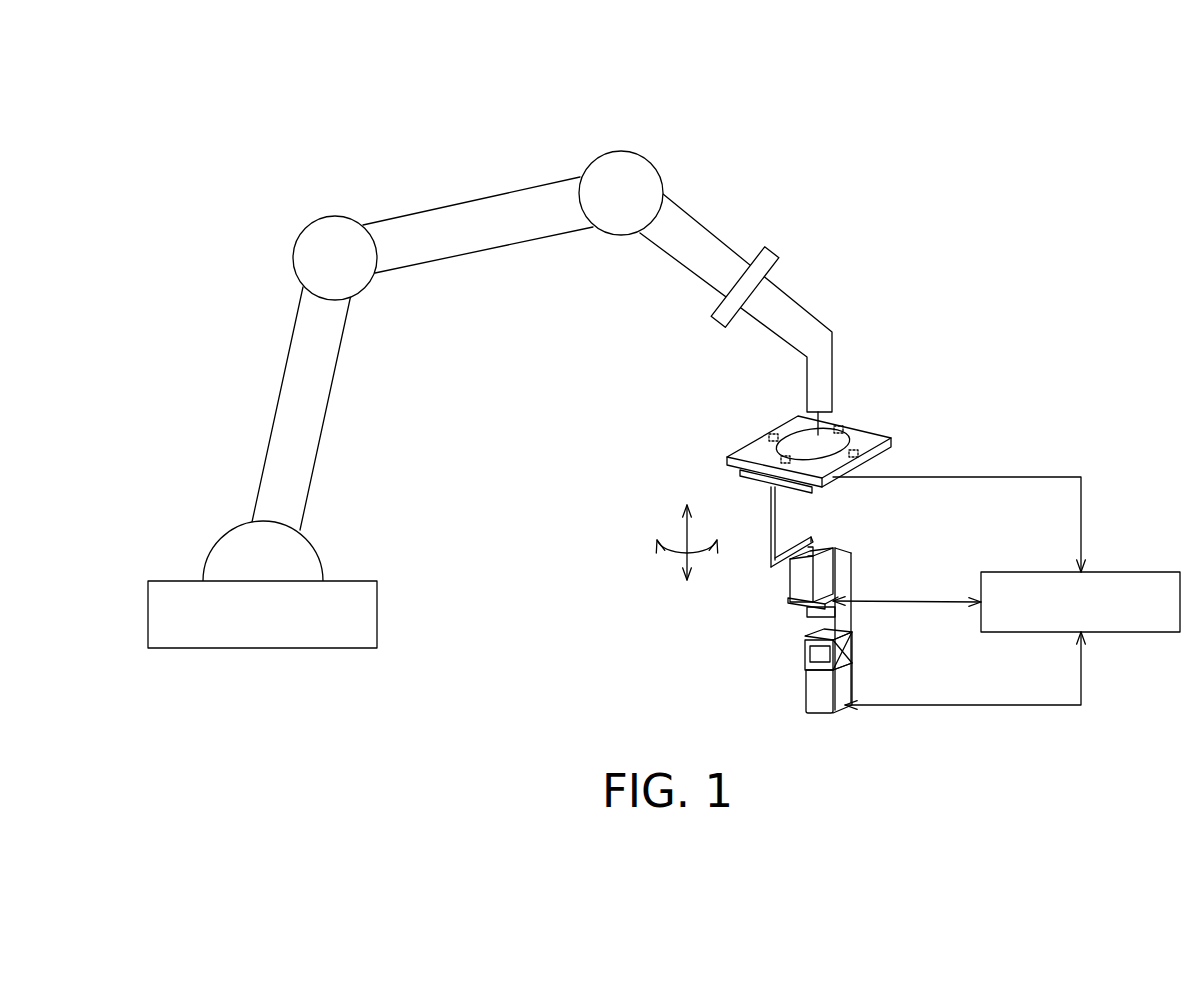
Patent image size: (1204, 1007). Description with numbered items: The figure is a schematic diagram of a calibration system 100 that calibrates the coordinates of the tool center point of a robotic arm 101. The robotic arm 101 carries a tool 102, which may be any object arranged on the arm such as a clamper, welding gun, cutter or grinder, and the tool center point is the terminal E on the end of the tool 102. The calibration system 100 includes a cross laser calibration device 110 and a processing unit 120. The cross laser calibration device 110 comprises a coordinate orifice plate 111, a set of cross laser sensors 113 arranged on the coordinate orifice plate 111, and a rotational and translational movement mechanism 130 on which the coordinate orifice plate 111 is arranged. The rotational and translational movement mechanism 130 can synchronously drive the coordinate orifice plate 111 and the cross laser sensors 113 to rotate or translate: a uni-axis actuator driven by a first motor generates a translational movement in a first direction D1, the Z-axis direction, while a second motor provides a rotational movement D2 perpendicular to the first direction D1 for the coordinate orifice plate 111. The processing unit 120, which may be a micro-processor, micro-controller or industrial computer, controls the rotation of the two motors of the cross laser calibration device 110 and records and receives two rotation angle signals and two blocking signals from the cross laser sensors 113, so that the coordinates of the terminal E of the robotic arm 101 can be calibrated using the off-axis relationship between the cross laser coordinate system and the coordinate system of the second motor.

The calibration system 100 is at (1188, 365).
The robotic arm 101 is at (506, 373).
The tool 102 is at (798, 305).
The cross laser calibration device 110 is at (804, 461).
The coordinate orifice plate 111 is at (703, 440).
The cross laser sensors 113 is at (772, 436).
The processing unit 120 is at (1155, 572).
The rotational and translational movement mechanism 130 is at (765, 608).
The tool center point E is at (822, 432).
The first direction D1 is at (688, 530).
The rotational movement D2 is at (703, 545).